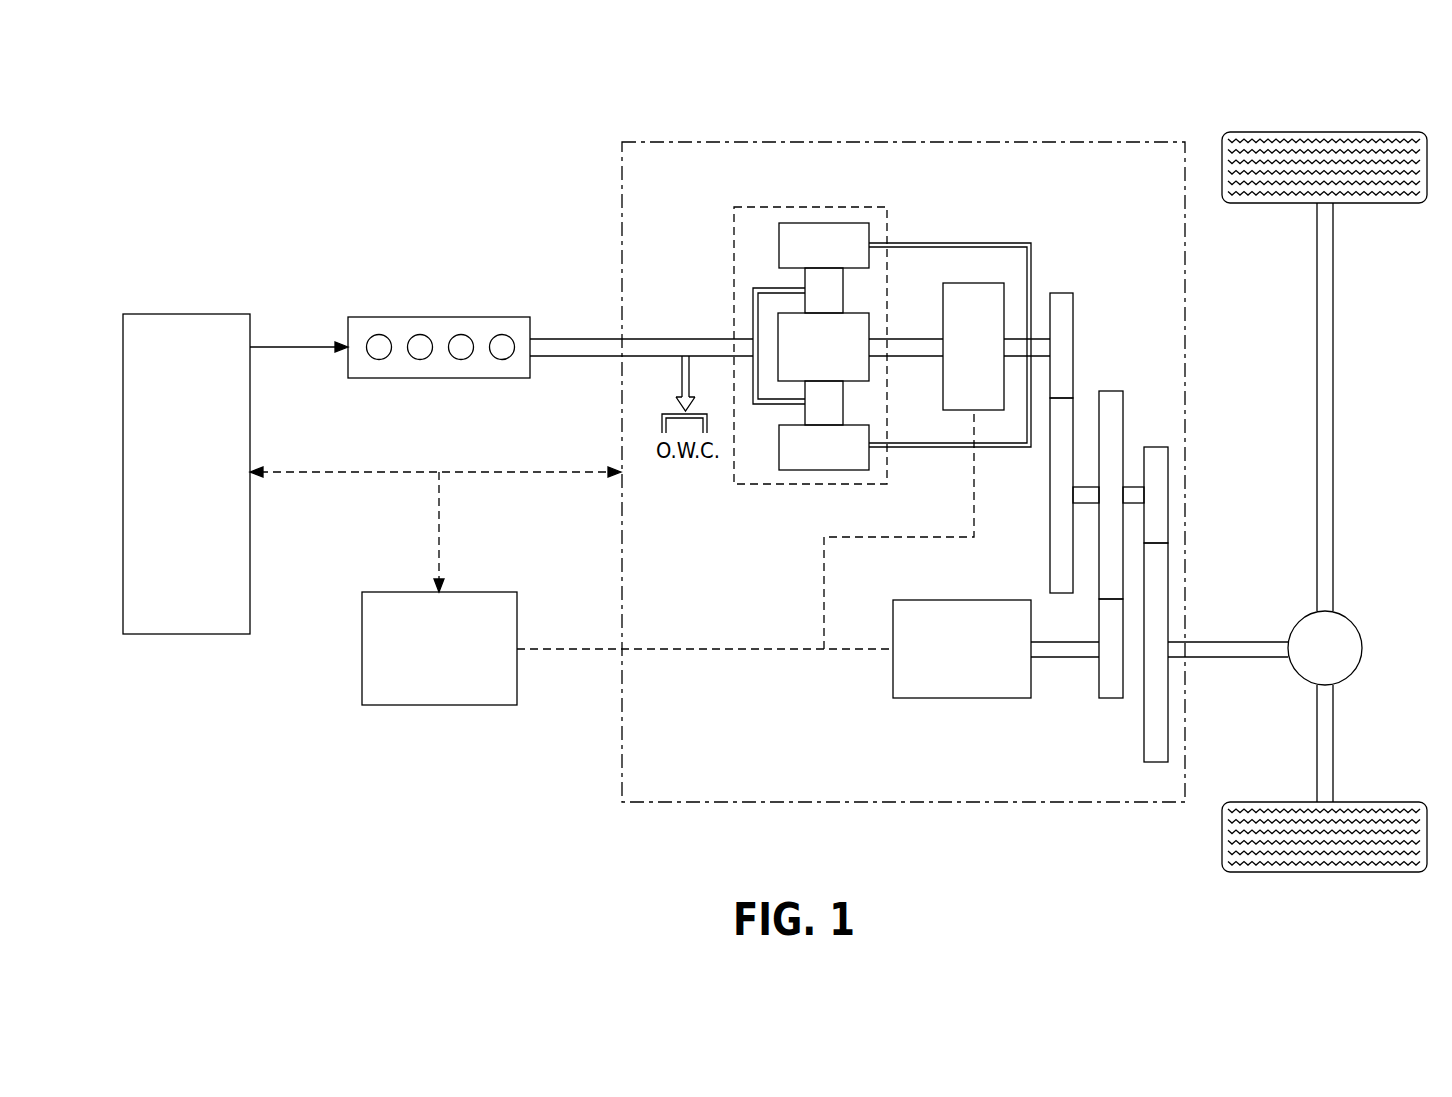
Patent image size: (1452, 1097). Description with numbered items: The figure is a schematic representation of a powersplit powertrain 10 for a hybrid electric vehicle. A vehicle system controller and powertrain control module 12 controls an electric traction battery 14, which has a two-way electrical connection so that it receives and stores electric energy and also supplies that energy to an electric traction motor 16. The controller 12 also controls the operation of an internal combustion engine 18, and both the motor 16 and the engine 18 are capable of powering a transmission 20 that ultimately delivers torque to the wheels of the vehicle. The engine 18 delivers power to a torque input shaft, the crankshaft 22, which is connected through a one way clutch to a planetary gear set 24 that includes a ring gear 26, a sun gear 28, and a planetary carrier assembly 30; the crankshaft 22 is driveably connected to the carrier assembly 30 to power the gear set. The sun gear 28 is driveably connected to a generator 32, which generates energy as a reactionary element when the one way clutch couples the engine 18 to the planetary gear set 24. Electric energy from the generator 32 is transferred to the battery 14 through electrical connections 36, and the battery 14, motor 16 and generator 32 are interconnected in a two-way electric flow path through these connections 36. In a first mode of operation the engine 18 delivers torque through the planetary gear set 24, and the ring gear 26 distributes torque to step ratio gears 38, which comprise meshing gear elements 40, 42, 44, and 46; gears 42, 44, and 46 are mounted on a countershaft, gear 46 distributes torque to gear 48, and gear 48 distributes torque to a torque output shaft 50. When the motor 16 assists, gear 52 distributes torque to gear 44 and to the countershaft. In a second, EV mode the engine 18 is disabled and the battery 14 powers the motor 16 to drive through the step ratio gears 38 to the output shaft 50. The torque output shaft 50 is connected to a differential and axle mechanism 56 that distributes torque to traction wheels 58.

The powersplit powertrain 10 is at (560, 102).
The vehicle system controller and powertrain control module 12 is at (223, 314).
The electric traction battery 14 is at (408, 592).
The electric traction motor 16 is at (962, 698).
The internal combustion engine 18 is at (393, 317).
The transmission 20 is at (1070, 142).
The crankshaft 22 is at (588, 338).
The planetary gear set 24 is at (887, 224).
The ring gear 26 is at (779, 243).
The sun gear 28 is at (778, 330).
The planetary carrier assembly 30 is at (753, 292).
The generator 32 is at (1004, 298).
The electrical connections 36 is at (748, 649).
The step ratio gears 38 is at (1160, 330).
The gear element 40 is at (1073, 337).
The gear 42 is at (1050, 543).
The gear 44 is at (1123, 403).
The gear 46 is at (1168, 482).
The gear 48 is at (1168, 617).
The torque output shaft 50 is at (1210, 657).
The gear 52 is at (1111, 698).
The differential and axle mechanism 56 is at (1361, 658).
The traction wheels 58 is at (1349, 132).